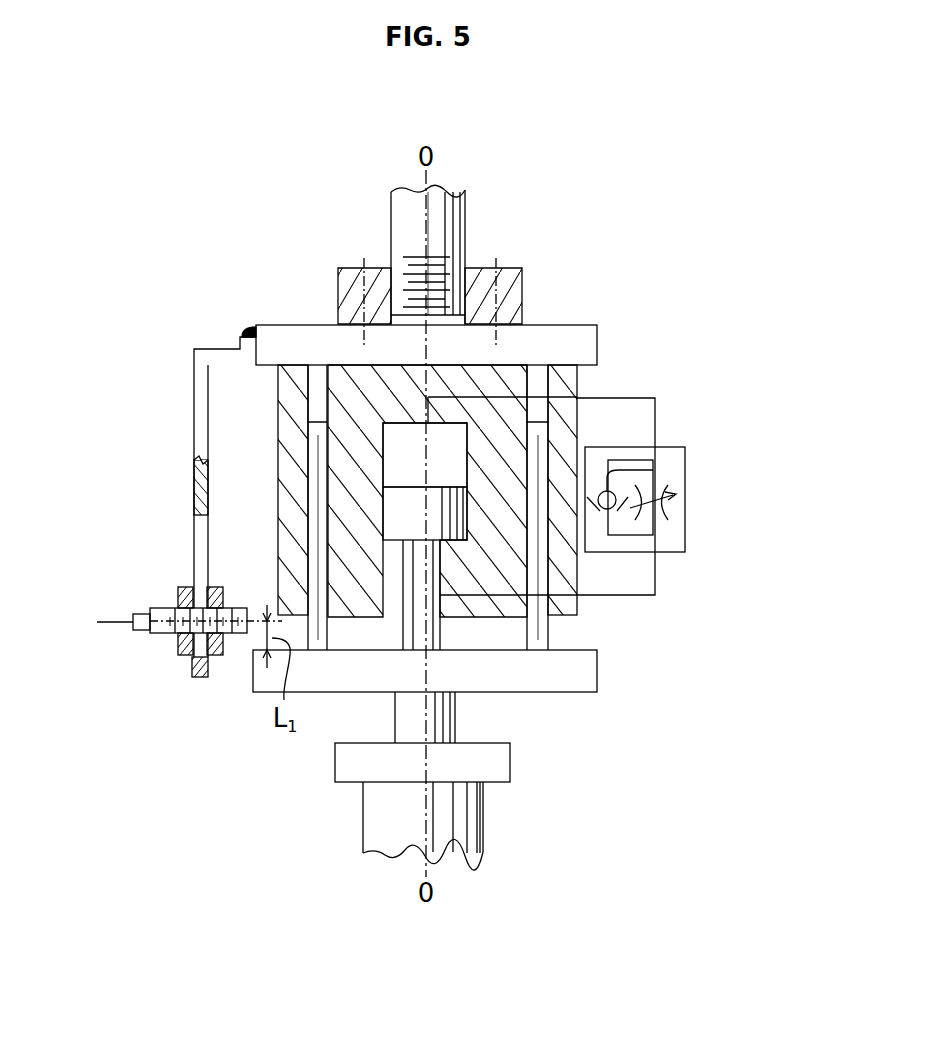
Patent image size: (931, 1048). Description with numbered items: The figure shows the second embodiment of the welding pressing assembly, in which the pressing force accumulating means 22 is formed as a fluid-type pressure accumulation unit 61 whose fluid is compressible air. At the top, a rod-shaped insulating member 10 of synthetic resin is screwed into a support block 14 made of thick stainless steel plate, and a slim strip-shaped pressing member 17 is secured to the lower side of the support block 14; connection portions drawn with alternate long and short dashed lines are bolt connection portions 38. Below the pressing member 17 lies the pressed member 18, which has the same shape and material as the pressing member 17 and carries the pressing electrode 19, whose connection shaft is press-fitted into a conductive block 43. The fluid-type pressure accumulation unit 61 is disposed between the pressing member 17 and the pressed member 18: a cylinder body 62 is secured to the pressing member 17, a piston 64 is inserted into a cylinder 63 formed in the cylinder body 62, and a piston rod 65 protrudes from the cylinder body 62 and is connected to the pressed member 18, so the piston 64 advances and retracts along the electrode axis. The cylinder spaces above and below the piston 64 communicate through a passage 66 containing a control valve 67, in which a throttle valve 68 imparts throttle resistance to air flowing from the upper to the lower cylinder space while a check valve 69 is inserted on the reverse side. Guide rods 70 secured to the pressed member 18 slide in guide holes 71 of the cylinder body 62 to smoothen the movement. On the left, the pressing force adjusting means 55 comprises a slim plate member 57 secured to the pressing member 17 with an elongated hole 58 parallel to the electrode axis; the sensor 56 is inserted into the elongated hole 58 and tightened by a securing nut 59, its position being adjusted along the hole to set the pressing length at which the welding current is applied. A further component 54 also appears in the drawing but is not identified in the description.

The insulating member 10 is at (391, 217).
The bolt connection portion 38 is at (500, 266).
The support block 14 is at (522, 298).
The pressing member 17 is at (597, 343).
The plate member 57 is at (194, 405).
The fluid-type pressure accumulation unit 61 is at (264, 443).
The cylinder body 62 is at (278, 496).
The pressing force accumulating means 22 is at (600, 619).
The guide holes 71 is at (307, 397).
The guide rods 70 is at (312, 461).
The elongated hole 58 is at (200, 531).
The cylinder 63 is at (458, 463).
The piston 64 is at (398, 523).
The piston rod 65 is at (402, 634).
The passage 66 is at (655, 415).
The control valve 67 is at (674, 447).
The check valve 69 is at (632, 470).
The throttle valve 68 is at (670, 512).
The pressing force adjusting means 55 is at (160, 598).
The securing nut 59 is at (186, 656).
The sensor 54 is at (163, 645).
The sensor 56 is at (262, 610).
The pressed member 18 is at (597, 686).
The pressing electrode 19 is at (458, 716).
The conductive block 43 is at (505, 766).